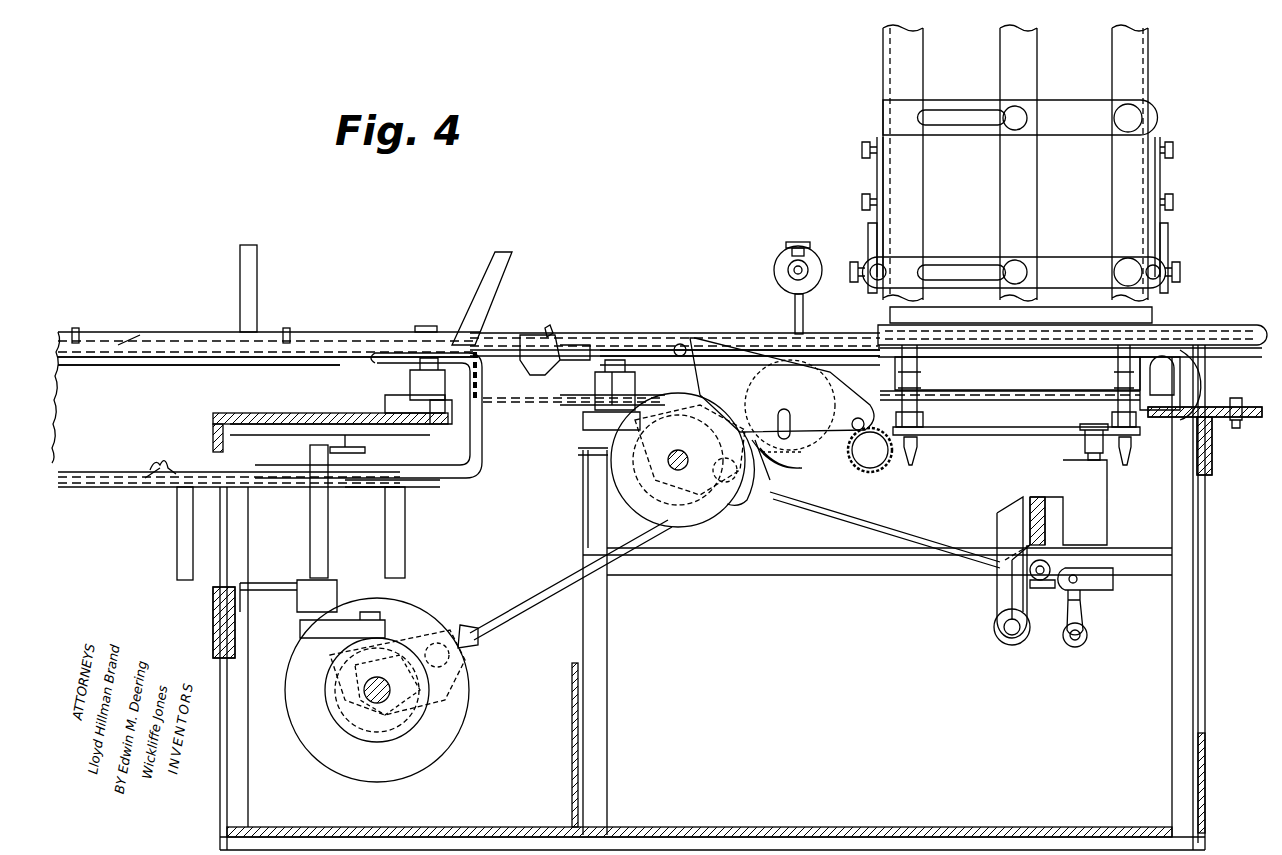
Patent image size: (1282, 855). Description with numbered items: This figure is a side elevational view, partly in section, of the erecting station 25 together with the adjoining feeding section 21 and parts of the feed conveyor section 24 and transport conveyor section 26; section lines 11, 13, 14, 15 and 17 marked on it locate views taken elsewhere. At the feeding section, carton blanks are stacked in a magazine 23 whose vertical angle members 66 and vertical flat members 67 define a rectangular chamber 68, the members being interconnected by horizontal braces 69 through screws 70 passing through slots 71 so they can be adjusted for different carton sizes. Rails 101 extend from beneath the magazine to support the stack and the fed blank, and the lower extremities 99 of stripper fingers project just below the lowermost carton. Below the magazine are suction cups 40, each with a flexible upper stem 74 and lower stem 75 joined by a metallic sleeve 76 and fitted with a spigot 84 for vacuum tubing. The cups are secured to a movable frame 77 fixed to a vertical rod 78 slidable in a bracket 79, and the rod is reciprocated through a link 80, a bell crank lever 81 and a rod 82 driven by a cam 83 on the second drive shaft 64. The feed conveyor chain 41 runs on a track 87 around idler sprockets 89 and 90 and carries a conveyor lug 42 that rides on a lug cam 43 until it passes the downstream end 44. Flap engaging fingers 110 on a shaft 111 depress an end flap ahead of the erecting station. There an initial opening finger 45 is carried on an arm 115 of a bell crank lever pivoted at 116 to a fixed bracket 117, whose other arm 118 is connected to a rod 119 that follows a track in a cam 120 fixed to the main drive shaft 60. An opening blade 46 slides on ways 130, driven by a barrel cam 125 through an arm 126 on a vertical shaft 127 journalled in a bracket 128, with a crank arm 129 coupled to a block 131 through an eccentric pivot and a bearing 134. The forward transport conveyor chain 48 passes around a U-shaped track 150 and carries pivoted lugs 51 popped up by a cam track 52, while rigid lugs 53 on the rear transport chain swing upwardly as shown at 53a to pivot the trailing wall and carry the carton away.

The section line 11 is at (857, 131).
The section line 13 is at (670, 220).
The section line 14 is at (507, 308).
The section line 15 is at (415, 221).
The section line 17 is at (263, 304).
The feeding section 21 is at (965, 487).
The magazine 23 is at (1174, 84).
The feed conveyor section 24 is at (951, 398).
The erecting station 25 is at (455, 265).
The transport conveyor section 26 is at (125, 287).
The suction cups 40 is at (925, 368).
The feed conveyor chain 41 is at (632, 340).
The conveyor lug 42 is at (552, 333).
The lug cam 43 is at (686, 338).
The downstream end of the cam 44 is at (585, 345).
The initial opening finger 45 is at (528, 370).
The opening blade 46 is at (426, 326).
The forward transport conveyor chain 48 is at (415, 480).
The lugs 51 is at (262, 345).
The cam track 52 is at (184, 362).
The lugs 53 is at (257, 258).
The upwardly swinging lug position 53a is at (511, 258).
The main drive shaft 60 is at (370, 700).
The second drive shaft 64 is at (674, 470).
The vertical angle members 66 is at (895, 45).
The vertical flat members 67 is at (1030, 48).
The rectangular chamber 68 is at (1096, 163).
The horizontal braces 69 is at (1060, 135).
The screws 70 is at (1142, 118).
The slots 71 is at (1100, 110).
The upper stem 74 is at (905, 345).
The lower stem 75 is at (931, 405).
The metallic sleeve 76 is at (1122, 380).
The movable frame 77 is at (1002, 444).
The vertical rod 78 is at (1105, 458).
The bracket 79 is at (1100, 515).
The link 80 is at (1080, 608).
The bell crank lever 81 is at (1052, 650).
The rod 82 is at (875, 520).
The cam 83 is at (722, 510).
The spigot 84 is at (917, 460).
The track 87 is at (785, 358).
The idler sprocket 89 is at (803, 452).
The idler sprocket 90 is at (870, 456).
The lower extremities of stripper fingers 99 is at (880, 320).
The rails 101 is at (1215, 328).
The flap engaging fingers 110 is at (803, 313).
The shaft 111 is at (814, 268).
The arm 115 is at (588, 372).
The pivot 116 is at (688, 346).
The fixed bracket 117 is at (668, 385).
The arm 118 is at (722, 386).
The rod 119 is at (565, 584).
The cam 120 is at (468, 690).
The barrel cam 125 is at (408, 722).
The arm 126 is at (352, 625).
The vertical shaft 127 is at (328, 540).
The bracket 128 is at (270, 580).
The crank arm 129 is at (372, 430).
The ways 130 is at (386, 400).
The block 131 is at (412, 383).
The bearing 134 is at (432, 424).
The U-shaped track 150 is at (480, 462).